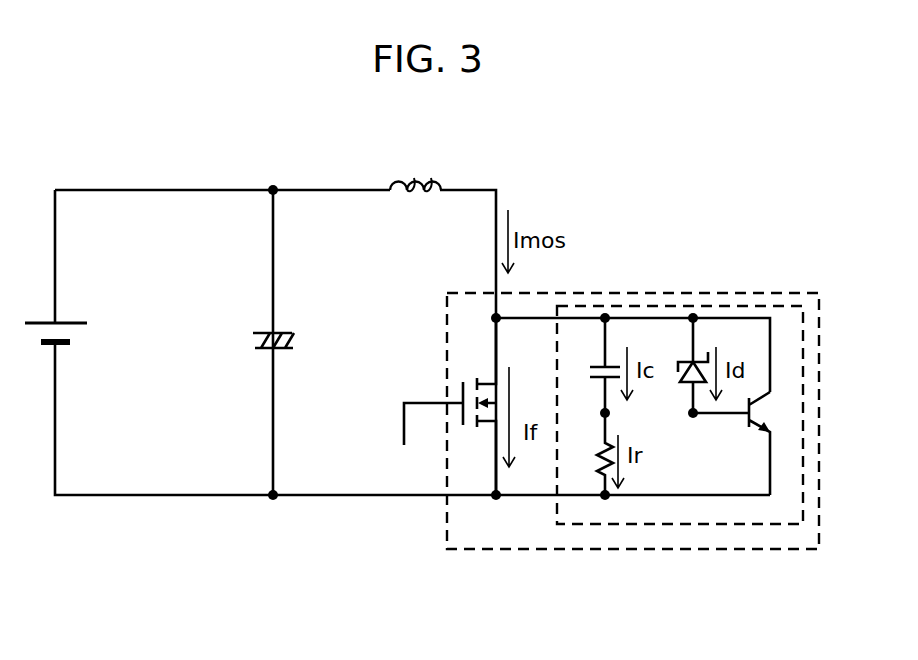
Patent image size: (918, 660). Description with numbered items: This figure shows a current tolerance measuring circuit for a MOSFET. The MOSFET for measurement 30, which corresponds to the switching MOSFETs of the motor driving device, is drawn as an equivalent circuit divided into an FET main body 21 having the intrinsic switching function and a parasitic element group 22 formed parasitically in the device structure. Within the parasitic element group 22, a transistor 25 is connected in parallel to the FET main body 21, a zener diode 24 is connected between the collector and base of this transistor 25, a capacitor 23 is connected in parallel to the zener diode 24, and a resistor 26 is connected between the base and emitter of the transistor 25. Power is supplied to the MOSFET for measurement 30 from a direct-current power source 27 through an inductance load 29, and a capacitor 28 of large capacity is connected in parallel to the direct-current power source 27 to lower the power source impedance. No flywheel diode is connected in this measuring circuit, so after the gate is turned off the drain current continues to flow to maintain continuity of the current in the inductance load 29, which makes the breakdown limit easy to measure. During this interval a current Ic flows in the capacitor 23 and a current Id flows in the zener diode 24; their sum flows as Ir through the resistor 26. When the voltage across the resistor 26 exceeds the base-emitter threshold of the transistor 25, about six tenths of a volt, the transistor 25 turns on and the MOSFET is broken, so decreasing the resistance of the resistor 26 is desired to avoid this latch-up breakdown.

The FET main body 21 is at (483, 379).
The parasitic element group 22 is at (785, 343).
The capacitor 23 is at (613, 365).
The zener diode 24 is at (703, 358).
The transistor 25 is at (758, 412).
The resistor 26 is at (598, 474).
The direct-current power source 27 is at (75, 318).
The capacitor of large capacity 28 is at (280, 330).
The inductance load 29 is at (423, 175).
The MOSFET for measurement 30 is at (810, 293).